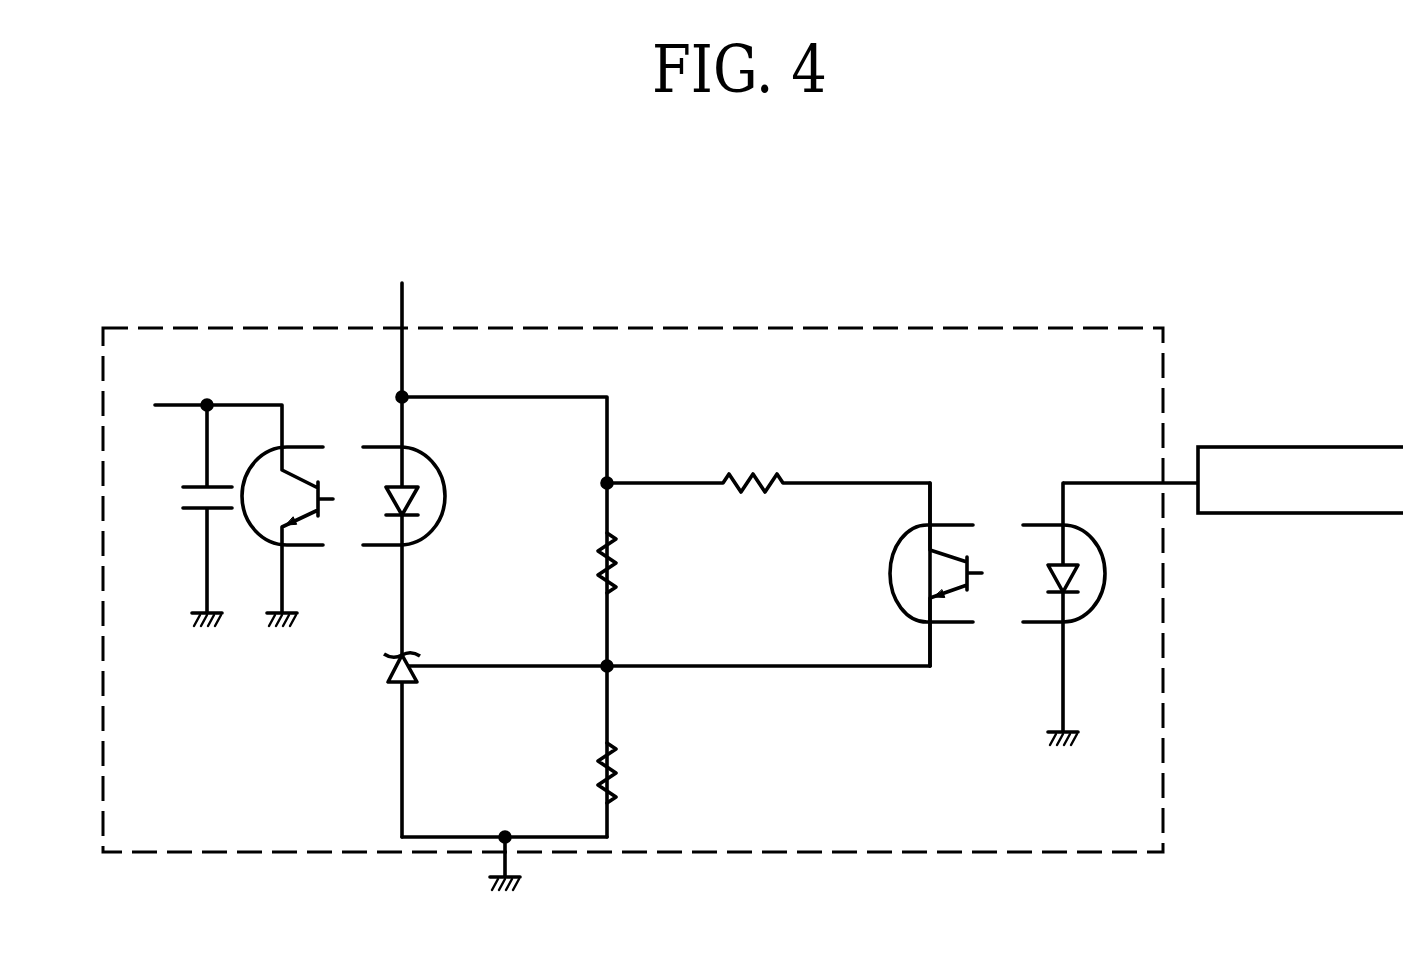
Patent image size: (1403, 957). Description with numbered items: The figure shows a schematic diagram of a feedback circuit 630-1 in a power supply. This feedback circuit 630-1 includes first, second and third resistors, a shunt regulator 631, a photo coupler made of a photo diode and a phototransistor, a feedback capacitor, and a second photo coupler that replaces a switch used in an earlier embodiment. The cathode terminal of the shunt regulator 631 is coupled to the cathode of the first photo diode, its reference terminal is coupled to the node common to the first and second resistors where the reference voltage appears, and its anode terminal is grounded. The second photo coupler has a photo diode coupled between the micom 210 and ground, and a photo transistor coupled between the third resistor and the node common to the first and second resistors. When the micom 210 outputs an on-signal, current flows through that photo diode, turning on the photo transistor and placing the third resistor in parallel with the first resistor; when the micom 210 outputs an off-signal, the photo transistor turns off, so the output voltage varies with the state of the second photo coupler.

The feedback circuit 630-1 is at (855, 327).
The shunt regulator 631 is at (394, 659).
The micom 210 is at (1357, 447).